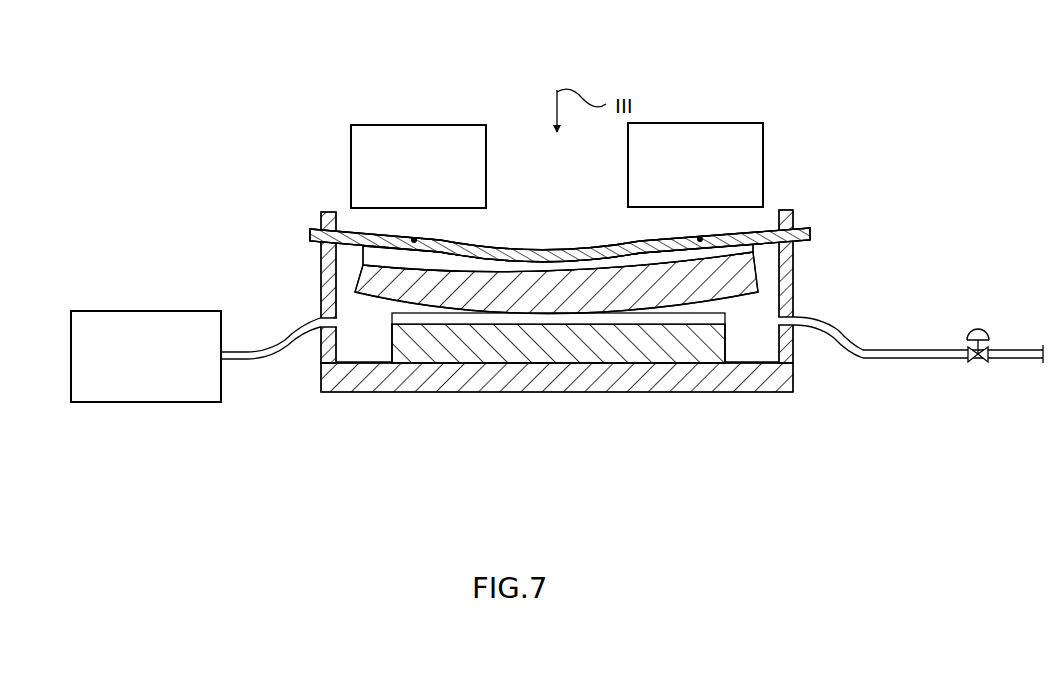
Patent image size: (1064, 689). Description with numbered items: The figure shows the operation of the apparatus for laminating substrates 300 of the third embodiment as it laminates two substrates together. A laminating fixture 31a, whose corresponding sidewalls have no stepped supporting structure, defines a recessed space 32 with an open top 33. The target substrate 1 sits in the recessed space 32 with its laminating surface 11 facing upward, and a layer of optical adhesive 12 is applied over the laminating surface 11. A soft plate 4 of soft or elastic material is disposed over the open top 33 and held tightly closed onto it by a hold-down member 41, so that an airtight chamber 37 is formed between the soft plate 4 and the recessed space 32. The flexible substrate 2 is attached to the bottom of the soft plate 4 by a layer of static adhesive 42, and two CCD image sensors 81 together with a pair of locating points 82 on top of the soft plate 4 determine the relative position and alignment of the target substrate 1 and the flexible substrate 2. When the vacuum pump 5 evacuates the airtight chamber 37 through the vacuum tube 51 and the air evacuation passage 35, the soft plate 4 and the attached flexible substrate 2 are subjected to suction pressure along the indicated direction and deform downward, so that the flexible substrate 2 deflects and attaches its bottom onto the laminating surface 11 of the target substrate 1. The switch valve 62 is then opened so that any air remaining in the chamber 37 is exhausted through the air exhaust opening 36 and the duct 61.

The apparatus for laminating substrates 300 is at (888, 96).
The target substrate 1 is at (531, 362).
The flexible substrate 2 is at (590, 272).
The soft plate 4 is at (812, 236).
The vacuum pump 5 is at (78, 321).
The laminating surface 11 is at (413, 320).
The optical adhesive 12 is at (463, 324).
The laminating fixture 31a is at (781, 393).
The recessed space 32 is at (732, 363).
The open top 33 is at (526, 238).
The air evacuation passage 35 is at (320, 340).
The air exhaust opening 36 is at (795, 340).
The airtight chamber 37 is at (338, 262).
The hold-down member 41 is at (784, 211).
The static adhesive 42 is at (552, 262).
The vacuum tube 51 is at (242, 360).
The duct 61 is at (899, 359).
The switch valve 62 is at (983, 363).
The CCD image sensor 81 is at (470, 128).
The locating point 82 is at (414, 240).